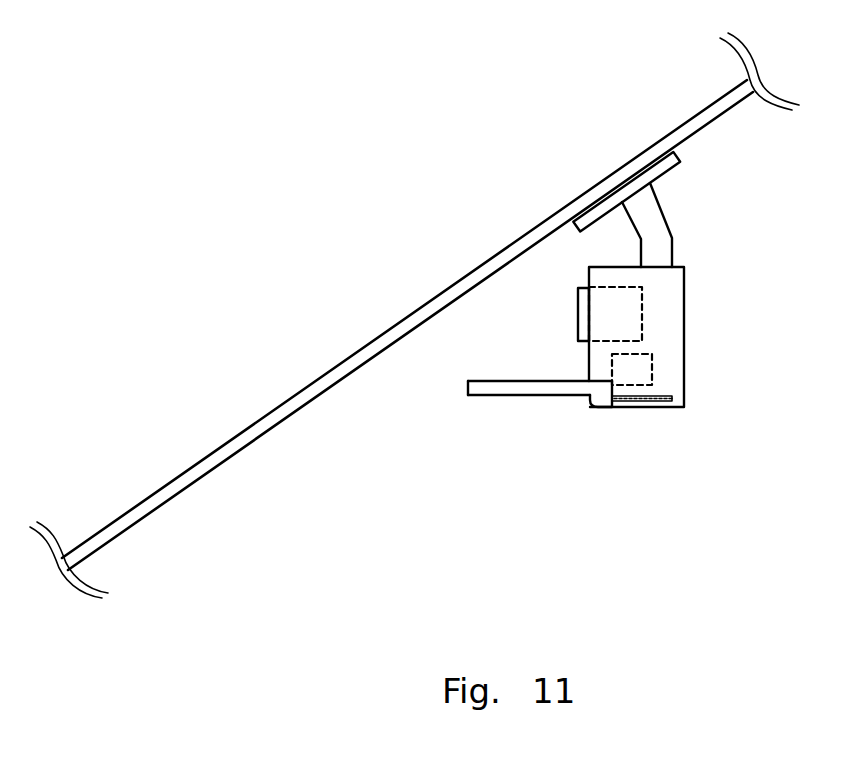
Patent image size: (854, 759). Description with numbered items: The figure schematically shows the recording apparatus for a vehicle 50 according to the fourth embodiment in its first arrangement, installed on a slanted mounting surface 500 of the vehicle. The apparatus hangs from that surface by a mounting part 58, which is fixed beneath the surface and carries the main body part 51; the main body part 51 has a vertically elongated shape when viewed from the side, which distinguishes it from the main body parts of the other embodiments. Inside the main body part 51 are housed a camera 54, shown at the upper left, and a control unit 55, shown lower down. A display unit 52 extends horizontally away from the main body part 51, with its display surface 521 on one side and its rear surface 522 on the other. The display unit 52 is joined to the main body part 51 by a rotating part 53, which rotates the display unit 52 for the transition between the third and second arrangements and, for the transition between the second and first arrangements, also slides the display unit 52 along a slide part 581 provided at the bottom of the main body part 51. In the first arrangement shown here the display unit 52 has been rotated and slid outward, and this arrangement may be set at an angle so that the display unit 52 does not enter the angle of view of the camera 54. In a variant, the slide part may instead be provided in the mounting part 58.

The rail 500 is at (157, 492).
The recording apparatus for a vehicle 50 is at (735, 307).
The main body part 51 is at (589, 358).
The display unit 52 is at (512, 388).
The display surface 521 is at (510, 395).
The rear surface 522 is at (478, 381).
The rotating part 53 is at (605, 407).
The camera 54 is at (578, 312).
The control unit 55 is at (652, 370).
The mounting part 58 is at (662, 218).
The slide part 581 is at (657, 403).